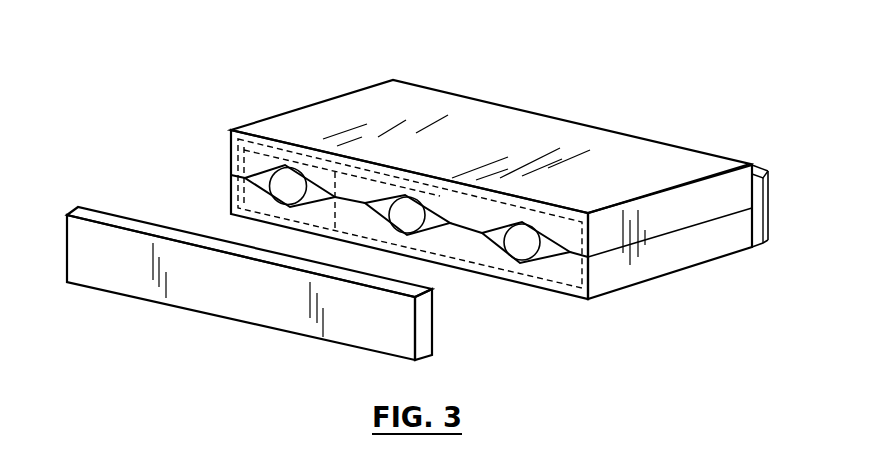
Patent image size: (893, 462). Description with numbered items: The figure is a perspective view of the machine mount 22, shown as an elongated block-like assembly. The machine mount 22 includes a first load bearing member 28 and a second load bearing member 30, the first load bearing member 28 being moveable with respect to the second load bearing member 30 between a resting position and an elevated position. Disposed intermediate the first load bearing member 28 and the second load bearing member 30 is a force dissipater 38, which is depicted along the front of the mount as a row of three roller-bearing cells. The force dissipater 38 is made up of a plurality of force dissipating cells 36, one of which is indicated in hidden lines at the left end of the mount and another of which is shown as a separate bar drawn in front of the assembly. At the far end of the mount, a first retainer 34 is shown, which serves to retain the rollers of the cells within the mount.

The machine mount 22 is at (531, 192).
The first load bearing member 28 is at (393, 80).
The second load bearing member 30 is at (588, 299).
The first retainer 34 is at (768, 240).
The force dissipating cell 36 is at (66, 225).
The force dissipater 38 is at (494, 272).